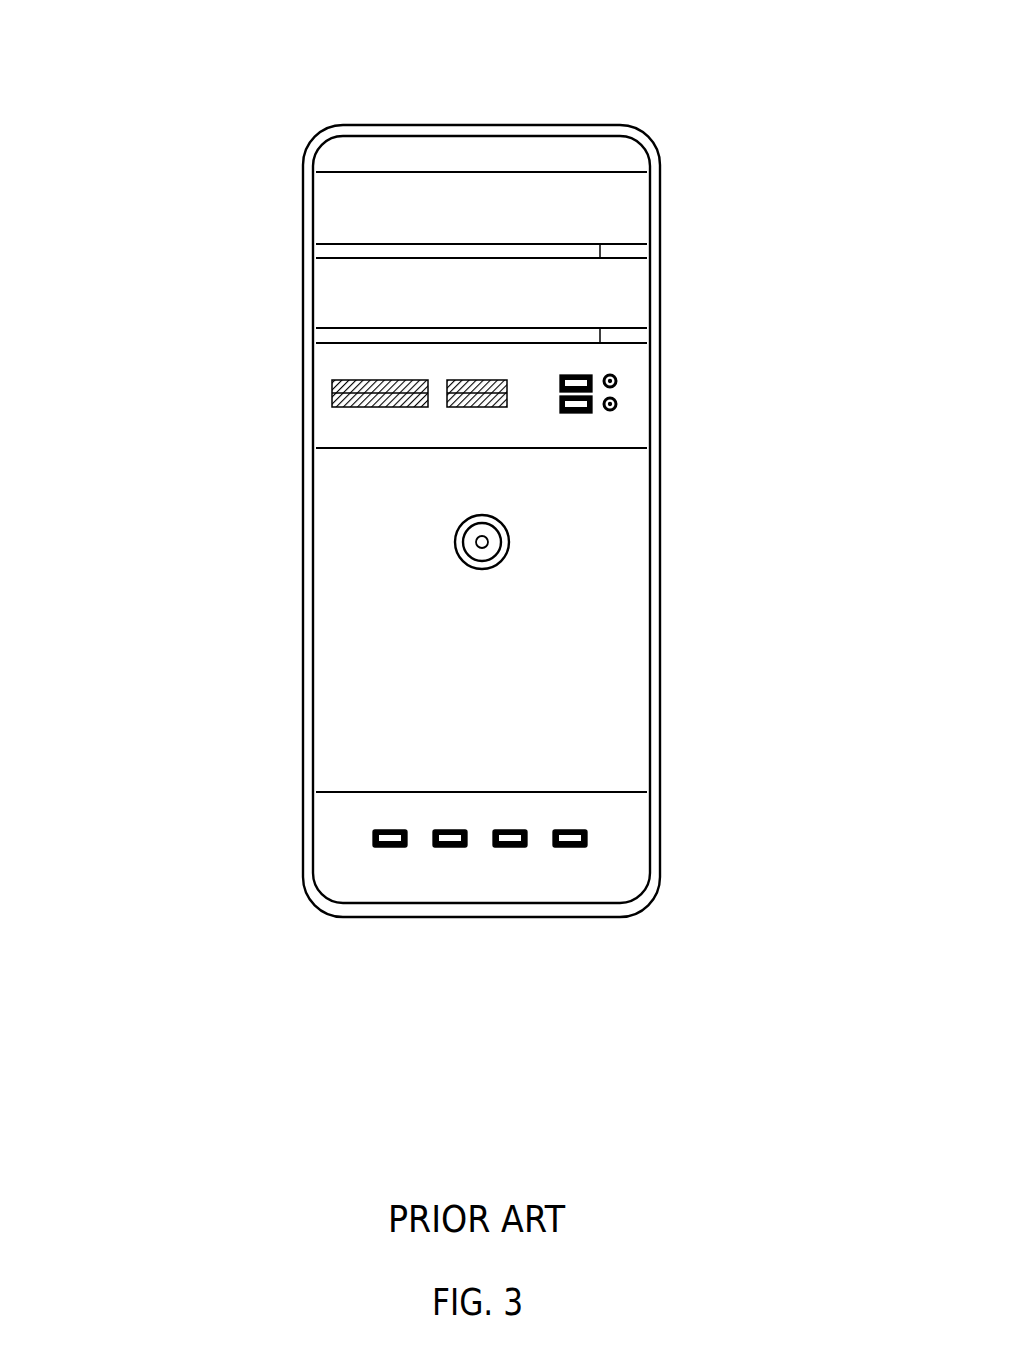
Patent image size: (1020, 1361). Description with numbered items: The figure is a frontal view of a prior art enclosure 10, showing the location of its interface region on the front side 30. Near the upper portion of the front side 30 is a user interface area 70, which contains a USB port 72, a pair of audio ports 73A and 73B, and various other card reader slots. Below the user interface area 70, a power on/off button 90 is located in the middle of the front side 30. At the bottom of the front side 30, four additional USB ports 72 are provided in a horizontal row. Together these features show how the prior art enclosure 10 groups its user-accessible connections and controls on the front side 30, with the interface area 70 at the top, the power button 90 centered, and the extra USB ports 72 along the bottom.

The prior art enclosure 10 is at (240, 98).
The front side 30 is at (625, 207).
The user interface area 70 is at (341, 361).
The USB port 72 is at (590, 404).
The audio port 73A is at (616, 379).
The audio port 73B is at (617, 403).
The power on/off button 90 is at (465, 540).